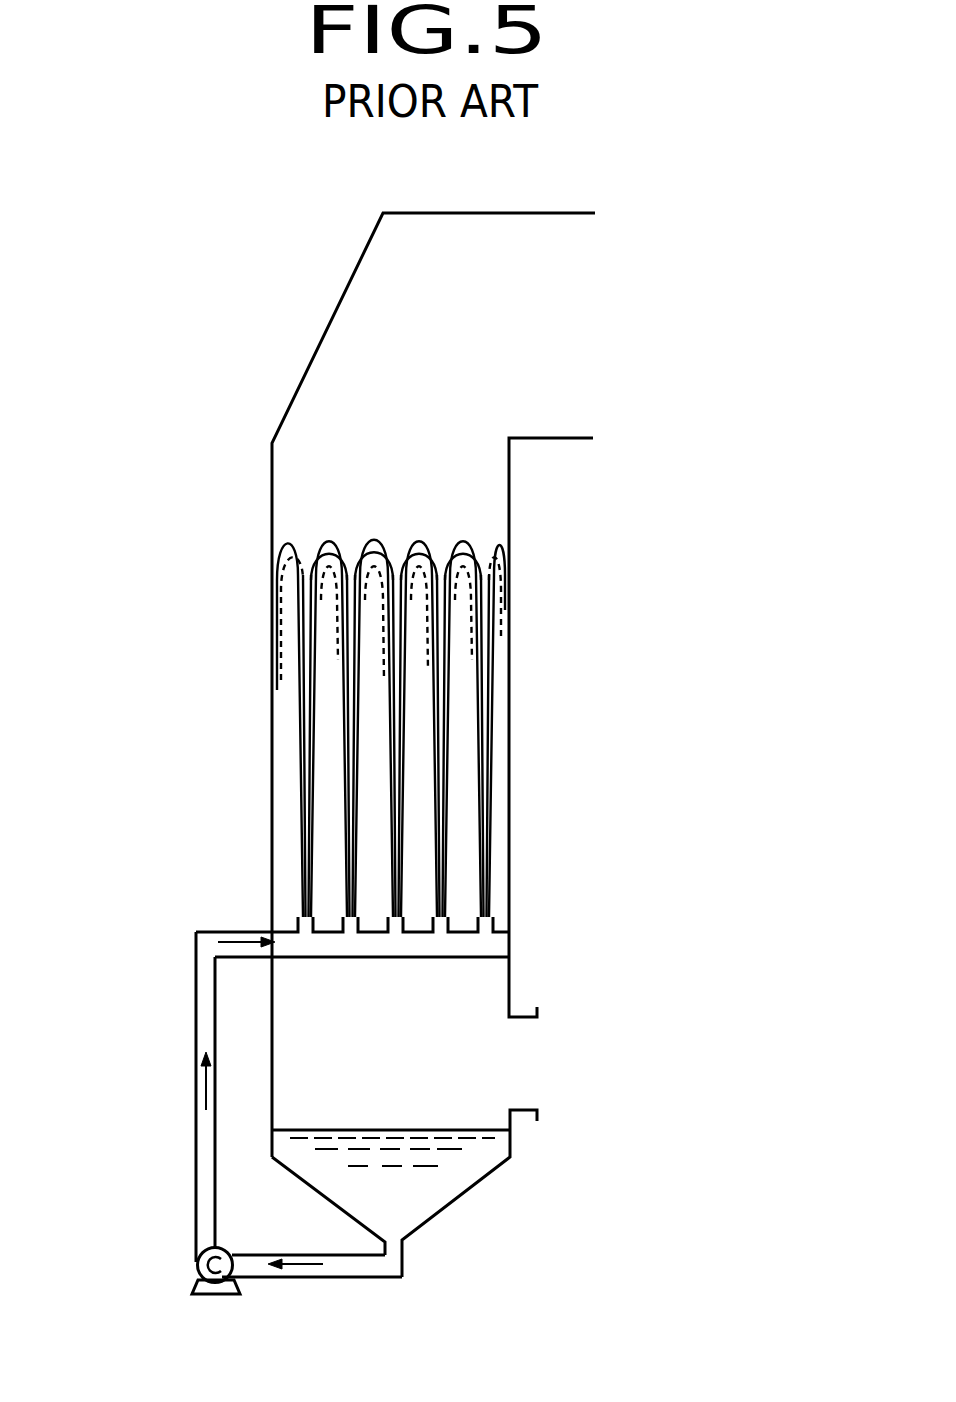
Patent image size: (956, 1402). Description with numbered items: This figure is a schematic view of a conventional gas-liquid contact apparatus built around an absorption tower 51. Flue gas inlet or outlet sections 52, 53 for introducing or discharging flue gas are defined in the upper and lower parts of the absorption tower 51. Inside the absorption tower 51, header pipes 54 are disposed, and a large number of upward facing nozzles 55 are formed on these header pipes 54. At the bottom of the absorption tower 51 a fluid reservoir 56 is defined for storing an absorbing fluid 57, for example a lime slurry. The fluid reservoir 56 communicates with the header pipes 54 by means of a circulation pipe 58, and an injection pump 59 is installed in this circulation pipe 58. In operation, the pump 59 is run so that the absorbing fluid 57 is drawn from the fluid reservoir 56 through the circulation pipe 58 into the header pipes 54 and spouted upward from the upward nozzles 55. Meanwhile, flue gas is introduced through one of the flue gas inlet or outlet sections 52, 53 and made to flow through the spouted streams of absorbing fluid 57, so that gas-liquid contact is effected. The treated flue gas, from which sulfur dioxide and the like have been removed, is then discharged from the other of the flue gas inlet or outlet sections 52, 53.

The absorption tower 51 is at (509, 657).
The flue gas inlet or outlet section 52 is at (538, 335).
The flue gas inlet or outlet section 53 is at (480, 1065).
The header pipes 54 is at (467, 957).
The upward facing nozzles 55 is at (492, 923).
The fluid reservoir 56 is at (420, 1228).
The absorbing fluid 57 is at (458, 1182).
The circulation pipe 58 is at (196, 1098).
The injection pump 59 is at (199, 1265).